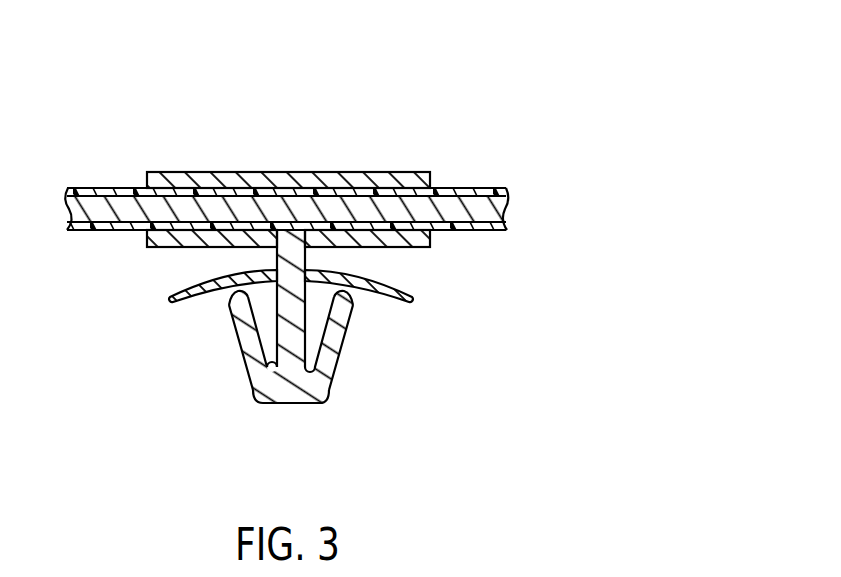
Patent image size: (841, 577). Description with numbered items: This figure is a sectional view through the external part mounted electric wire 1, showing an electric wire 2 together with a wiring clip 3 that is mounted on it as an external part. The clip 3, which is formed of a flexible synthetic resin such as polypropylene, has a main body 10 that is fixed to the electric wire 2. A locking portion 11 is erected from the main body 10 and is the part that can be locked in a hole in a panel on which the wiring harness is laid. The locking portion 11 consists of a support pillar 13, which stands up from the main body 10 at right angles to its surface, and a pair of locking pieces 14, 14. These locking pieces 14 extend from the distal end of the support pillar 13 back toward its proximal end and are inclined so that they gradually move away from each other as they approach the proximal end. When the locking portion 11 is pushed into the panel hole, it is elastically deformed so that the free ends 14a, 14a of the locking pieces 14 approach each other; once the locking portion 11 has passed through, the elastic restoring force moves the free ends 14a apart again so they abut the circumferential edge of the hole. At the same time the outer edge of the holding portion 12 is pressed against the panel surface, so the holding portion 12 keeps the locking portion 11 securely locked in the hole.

The external part mounted electric wire 1 is at (476, 67).
The electric wire 2 is at (456, 176).
The main body 10 is at (288, 178).
The wiring clip 3 is at (246, 407).
The locking portion 11 is at (287, 404).
The holding portion 12 is at (180, 294).
The support pillar 13 is at (336, 370).
The locking piece 14 is at (236, 338).
The free end 14a is at (232, 303).